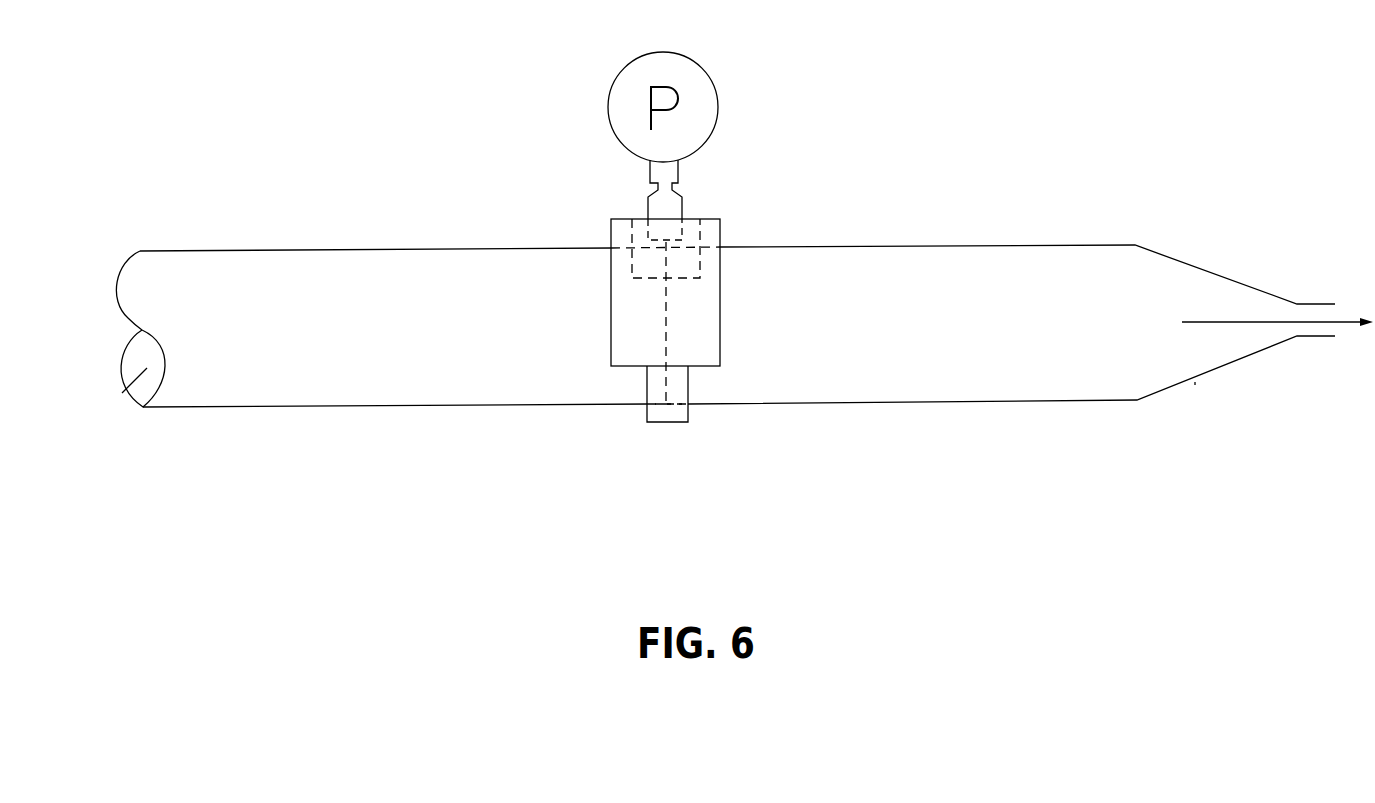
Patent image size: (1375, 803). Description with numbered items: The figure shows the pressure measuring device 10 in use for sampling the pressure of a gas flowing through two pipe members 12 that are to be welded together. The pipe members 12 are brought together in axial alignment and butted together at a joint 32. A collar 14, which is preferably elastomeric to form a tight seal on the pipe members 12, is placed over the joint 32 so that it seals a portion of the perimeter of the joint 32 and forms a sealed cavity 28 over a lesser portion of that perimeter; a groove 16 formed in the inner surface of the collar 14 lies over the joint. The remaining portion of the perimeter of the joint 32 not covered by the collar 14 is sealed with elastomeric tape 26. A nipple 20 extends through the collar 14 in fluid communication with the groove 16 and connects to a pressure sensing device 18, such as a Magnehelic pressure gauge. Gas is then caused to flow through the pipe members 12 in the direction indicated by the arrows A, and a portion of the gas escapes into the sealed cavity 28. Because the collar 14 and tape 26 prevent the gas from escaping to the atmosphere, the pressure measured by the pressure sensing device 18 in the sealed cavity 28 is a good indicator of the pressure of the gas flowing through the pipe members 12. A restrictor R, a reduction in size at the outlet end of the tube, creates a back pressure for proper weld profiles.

The pressure measuring device 10 is at (582, 152).
The pipe members 12 is at (374, 250).
The collar 14 is at (611, 329).
The groove 16 is at (630, 238).
The pressure sensing device 18 is at (718, 112).
The nipple 20 is at (682, 202).
The elastomeric tape 26 is at (647, 413).
The sealed cavity 28 is at (690, 238).
The joint 32 is at (670, 388).
The arrows A is at (122, 393).
The restrictor R is at (1195, 382).